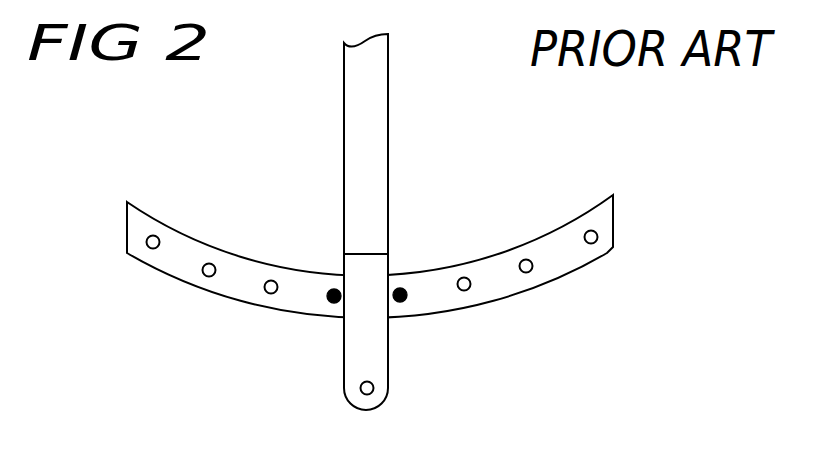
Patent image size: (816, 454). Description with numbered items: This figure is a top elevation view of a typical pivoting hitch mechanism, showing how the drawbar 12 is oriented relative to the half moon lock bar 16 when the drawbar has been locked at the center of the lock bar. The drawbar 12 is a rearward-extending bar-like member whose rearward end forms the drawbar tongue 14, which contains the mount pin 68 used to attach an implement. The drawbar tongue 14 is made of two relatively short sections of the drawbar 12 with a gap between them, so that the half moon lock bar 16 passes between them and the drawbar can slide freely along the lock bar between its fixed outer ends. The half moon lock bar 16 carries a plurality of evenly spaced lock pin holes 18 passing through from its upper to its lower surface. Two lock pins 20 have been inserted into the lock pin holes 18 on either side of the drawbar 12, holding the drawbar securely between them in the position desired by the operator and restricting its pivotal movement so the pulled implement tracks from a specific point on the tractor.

The drawbar 12 is at (344, 129).
The drawbar tongue 14 is at (345, 372).
The half moon lock bar 16 is at (422, 267).
The lock pin holes 18 is at (460, 278).
The lock pins 20 is at (340, 300).
The mount pin 68 is at (360, 391).